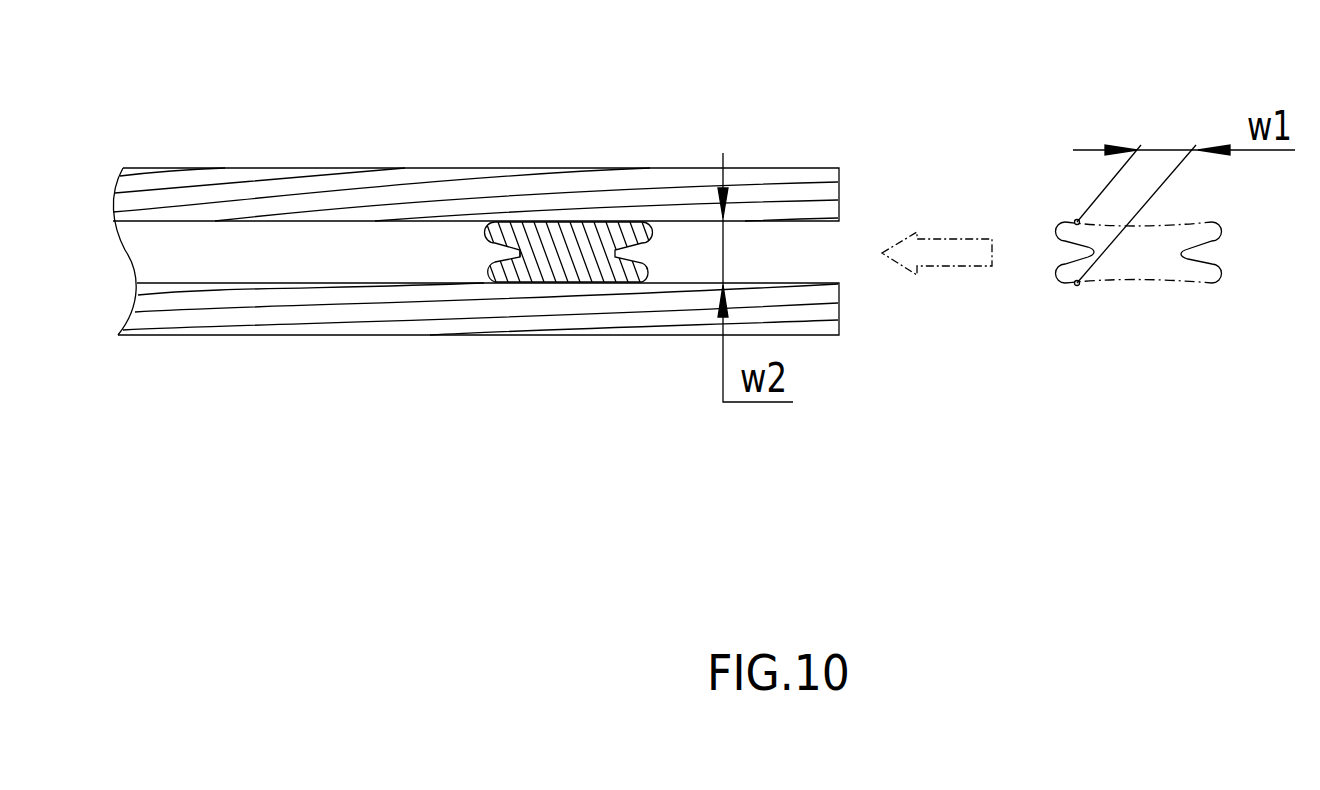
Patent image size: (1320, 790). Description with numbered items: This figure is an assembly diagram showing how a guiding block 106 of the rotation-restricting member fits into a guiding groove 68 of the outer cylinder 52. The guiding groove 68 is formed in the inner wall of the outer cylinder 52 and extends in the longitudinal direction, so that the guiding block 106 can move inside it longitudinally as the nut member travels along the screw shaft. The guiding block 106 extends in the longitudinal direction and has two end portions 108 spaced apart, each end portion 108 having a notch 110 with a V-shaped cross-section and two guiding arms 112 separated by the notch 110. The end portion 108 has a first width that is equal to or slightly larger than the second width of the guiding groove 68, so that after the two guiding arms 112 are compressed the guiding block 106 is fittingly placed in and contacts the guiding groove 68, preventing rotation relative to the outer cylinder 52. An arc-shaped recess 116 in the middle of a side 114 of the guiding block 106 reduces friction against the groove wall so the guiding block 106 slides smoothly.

The outer cylinder 52 is at (296, 187).
The guiding groove 68 is at (300, 258).
The guiding block 106 is at (570, 240).
The end portion 108 is at (637, 273).
The notch 110 is at (497, 250).
The guiding arm 112 is at (495, 228).
The side 114 is at (517, 277).
The arc-shaped recess 116 is at (557, 278).